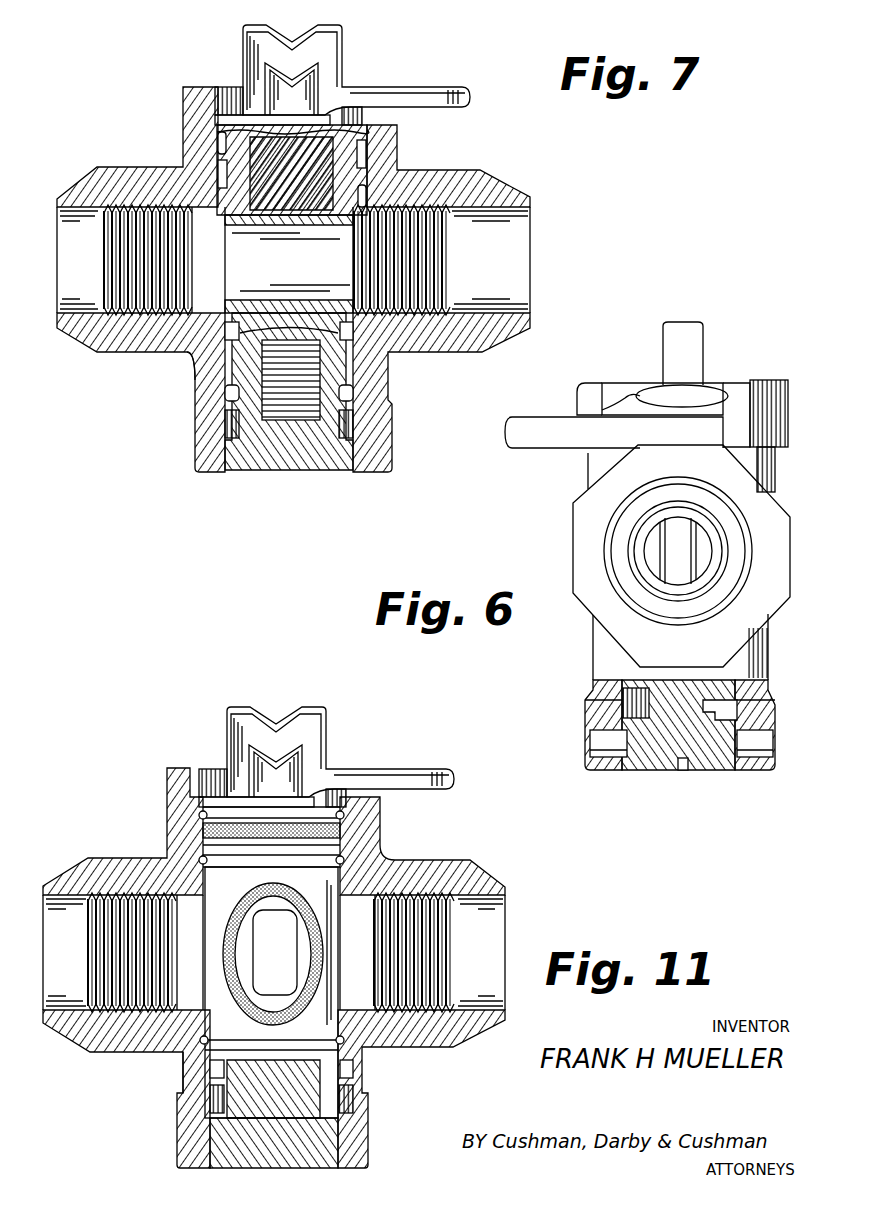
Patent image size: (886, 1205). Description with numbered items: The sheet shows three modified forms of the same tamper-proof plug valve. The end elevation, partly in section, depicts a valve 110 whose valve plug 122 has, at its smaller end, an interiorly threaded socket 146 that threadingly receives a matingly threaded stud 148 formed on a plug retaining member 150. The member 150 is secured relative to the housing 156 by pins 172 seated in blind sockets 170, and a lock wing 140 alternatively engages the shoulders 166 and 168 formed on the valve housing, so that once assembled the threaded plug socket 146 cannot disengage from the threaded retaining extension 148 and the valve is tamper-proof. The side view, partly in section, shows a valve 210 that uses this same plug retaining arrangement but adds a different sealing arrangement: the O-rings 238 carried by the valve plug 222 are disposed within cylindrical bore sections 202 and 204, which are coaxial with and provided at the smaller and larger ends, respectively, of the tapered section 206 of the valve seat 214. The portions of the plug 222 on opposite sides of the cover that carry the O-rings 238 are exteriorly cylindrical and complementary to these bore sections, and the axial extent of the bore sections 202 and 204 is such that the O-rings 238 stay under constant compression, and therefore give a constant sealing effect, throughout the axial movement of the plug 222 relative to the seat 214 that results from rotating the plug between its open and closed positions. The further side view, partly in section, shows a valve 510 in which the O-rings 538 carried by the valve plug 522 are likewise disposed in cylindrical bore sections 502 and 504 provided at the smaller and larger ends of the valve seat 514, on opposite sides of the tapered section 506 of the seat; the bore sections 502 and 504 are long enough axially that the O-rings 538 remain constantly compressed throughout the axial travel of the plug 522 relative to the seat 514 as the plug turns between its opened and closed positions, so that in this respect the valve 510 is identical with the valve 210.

In FIG. 7, the cylindrical bore section 202 is at (225, 393).
In FIG. 7, the cylindrical bore section 204 is at (388, 143).
In FIG. 7, the tapered section 206 is at (398, 163).
In FIG. 7, the valve 210 is at (477, 138).
In FIG. 7, the valve seat 214 is at (191, 360).
In FIG. 7, the valve plug 222 is at (348, 368).
In FIG. 7, the O-rings 238 is at (220, 143).
In FIG. 6, the valve 110 is at (749, 353).
In FIG. 6, the valve plug 122 is at (725, 678).
In FIG. 6, the lock wing 140 is at (705, 392).
In FIG. 6, the interiorly threaded socket 146 is at (588, 712).
In FIG. 6, the threaded stud 148 is at (740, 688).
In FIG. 6, the plug retaining member 150 is at (715, 765).
In FIG. 6, the housing 156 is at (765, 700).
In FIG. 6, the shoulder 166 is at (613, 395).
In FIG. 6, the shoulder 168 is at (730, 398).
In FIG. 6, the blind sockets 170 is at (618, 768).
In FIG. 6, the pins 172 is at (588, 757).
In FIG. 11, the cylindrical bore section 502 is at (210, 1095).
In FIG. 11, the cylindrical bore section 504 is at (203, 813).
In FIG. 11, the tapered section 506 is at (380, 868).
In FIG. 11, the valve 510 is at (460, 829).
In FIG. 11, the valve seat 514 is at (183, 1067).
In FIG. 11, the valve plug 522 is at (376, 858).
In FIG. 11, the O-rings 538 is at (380, 818).